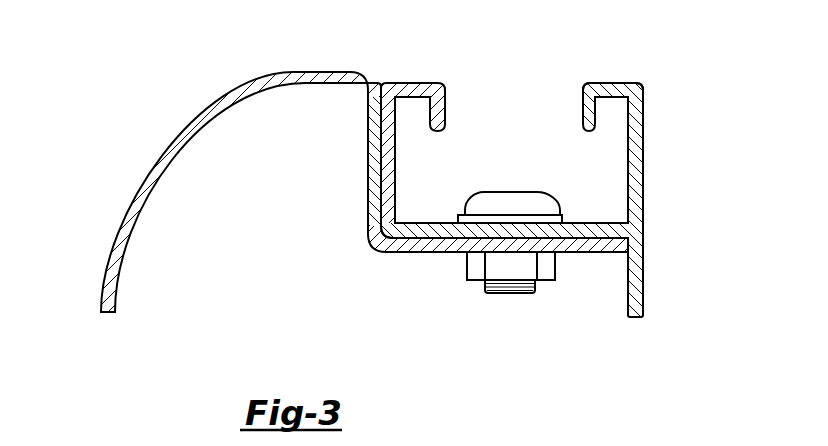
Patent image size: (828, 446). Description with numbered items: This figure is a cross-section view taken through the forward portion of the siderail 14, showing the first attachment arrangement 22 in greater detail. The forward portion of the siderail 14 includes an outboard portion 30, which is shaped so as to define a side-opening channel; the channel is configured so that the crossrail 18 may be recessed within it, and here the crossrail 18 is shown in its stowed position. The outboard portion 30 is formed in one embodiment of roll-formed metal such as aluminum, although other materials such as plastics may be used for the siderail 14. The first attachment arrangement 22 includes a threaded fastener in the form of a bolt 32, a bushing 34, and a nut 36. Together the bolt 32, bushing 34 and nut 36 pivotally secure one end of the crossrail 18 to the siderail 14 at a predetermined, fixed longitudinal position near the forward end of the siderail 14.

The siderail 14 is at (108, 129).
The outboard portion 30 is at (287, 80).
The first attachment arrangement 22 is at (572, 191).
The crossrail 18 is at (627, 83).
The bolt 32 is at (513, 200).
The bushing 34 is at (548, 222).
The nut 36 is at (545, 266).